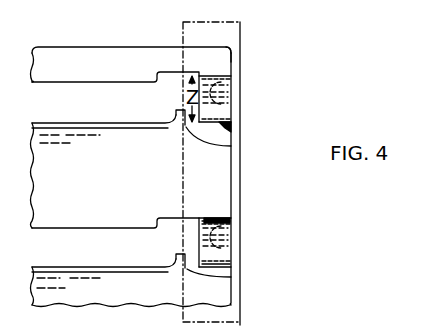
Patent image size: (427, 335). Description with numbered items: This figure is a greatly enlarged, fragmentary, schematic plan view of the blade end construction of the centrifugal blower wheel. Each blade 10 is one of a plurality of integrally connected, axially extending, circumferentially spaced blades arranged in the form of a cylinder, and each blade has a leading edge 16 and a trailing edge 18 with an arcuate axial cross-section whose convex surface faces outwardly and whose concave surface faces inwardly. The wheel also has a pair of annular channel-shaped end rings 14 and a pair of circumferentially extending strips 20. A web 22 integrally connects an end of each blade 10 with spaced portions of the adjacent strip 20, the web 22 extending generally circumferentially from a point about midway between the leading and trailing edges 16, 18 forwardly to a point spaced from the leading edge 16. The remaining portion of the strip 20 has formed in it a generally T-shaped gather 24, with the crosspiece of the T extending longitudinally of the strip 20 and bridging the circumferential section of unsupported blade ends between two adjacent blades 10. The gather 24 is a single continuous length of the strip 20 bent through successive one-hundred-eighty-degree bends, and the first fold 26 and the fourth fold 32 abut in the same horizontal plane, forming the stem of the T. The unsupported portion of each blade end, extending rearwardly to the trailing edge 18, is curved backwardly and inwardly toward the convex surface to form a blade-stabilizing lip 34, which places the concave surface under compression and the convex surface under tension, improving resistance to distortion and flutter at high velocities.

The blade 10 is at (112, 50).
The end ring 14 is at (240, 35).
The leading edge 16 is at (65, 85).
The trailing edge 18 is at (118, 123).
The strip 20 is at (231, 58).
The web 22 is at (232, 147).
The T-shaped gather 24 is at (228, 130).
The first fold 26 is at (232, 108).
The fourth fold 32 is at (225, 83).
The blade-stabilizing lip 34 is at (173, 121).